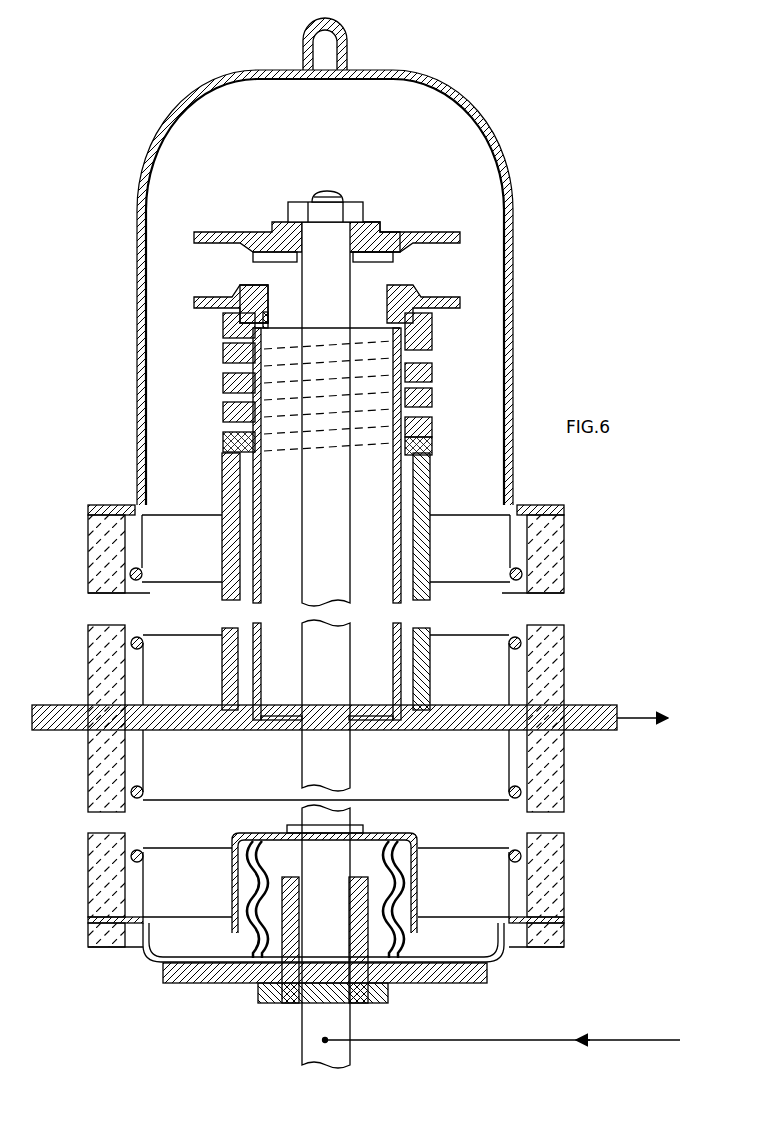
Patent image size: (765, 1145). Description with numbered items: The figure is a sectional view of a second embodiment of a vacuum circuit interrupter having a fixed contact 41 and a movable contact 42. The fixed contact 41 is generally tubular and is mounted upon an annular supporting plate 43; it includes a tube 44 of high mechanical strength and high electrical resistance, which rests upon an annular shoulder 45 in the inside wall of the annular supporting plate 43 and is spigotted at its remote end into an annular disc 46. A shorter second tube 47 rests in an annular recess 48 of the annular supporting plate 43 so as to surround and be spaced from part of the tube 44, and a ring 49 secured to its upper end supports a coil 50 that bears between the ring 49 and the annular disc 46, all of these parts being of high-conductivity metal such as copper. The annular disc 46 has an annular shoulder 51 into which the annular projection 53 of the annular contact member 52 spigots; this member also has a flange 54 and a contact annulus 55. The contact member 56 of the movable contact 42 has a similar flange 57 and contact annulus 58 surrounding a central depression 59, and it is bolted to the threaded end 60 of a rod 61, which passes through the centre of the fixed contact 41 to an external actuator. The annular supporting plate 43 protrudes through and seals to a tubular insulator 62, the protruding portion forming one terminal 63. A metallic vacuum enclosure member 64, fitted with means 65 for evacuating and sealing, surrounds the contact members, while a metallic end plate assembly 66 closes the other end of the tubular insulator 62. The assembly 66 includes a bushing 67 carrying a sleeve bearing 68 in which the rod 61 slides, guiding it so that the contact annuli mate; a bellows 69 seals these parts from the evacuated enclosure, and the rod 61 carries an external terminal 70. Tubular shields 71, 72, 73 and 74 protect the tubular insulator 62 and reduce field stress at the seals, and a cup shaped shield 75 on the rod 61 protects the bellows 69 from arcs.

The fixed contact 41 is at (219, 539).
The movable contact 42 is at (334, 618).
The annular supporting plate 43 is at (467, 718).
The tube 44 is at (402, 496).
The annular shoulder 45 is at (398, 722).
The annular disc 46 is at (223, 332).
The second tube 47 is at (431, 555).
The annular recess 48 is at (233, 717).
The ring 49 is at (222, 448).
The coil 50 is at (223, 411).
The annular shoulder 51 is at (432, 331).
The annular contact member 52 is at (437, 296).
The annular projection 53 is at (268, 318).
The flange 54 is at (200, 297).
The contact annulus 55 is at (250, 287).
The contact member 56 is at (393, 238).
The flange 57 is at (457, 233).
The contact annulus 58 is at (395, 258).
The central depression 59 is at (268, 253).
The threaded end 60 is at (332, 233).
The rod 61 is at (317, 542).
The tubular insulator 62 is at (90, 551).
The terminal 63 is at (619, 707).
The metallic vacuum enclosure member 64 is at (168, 123).
The means for evacuating and sealing off 65 is at (303, 45).
The metallic end plate assembly 66 is at (190, 990).
The bushing 67 is at (270, 1003).
The sleeve bearing 68 is at (298, 951).
The bellows 69 is at (400, 897).
The terminal 70 is at (328, 1043).
The tubular shield 71 is at (147, 578).
The tubular shield 72 is at (147, 665).
The tubular shield 73 is at (147, 772).
The tubular shield 74 is at (148, 877).
The cup shaped shield 75 is at (418, 878).